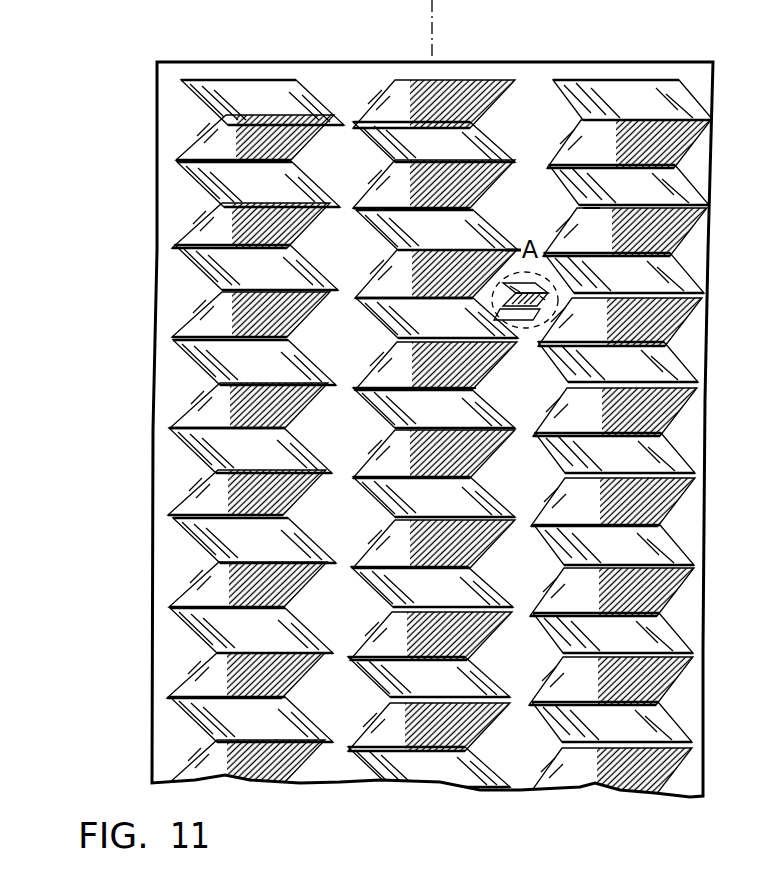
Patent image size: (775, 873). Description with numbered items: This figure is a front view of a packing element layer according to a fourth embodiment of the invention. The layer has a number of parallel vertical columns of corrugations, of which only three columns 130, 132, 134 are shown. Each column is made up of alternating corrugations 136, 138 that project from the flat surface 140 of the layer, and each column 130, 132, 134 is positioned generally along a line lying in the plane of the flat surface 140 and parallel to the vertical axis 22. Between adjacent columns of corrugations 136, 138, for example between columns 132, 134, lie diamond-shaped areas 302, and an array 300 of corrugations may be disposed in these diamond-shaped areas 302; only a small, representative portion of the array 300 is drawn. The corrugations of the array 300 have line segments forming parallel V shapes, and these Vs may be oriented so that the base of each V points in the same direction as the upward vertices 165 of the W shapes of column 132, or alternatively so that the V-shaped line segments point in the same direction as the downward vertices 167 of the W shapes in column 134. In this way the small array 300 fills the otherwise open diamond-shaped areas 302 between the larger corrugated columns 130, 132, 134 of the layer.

The vertical axis 22 is at (433, 8).
The column 130 is at (221, 458).
The column 132 is at (340, 804).
The column 134 is at (682, 803).
The corrugation 136 is at (188, 139).
The corrugation 138 is at (190, 191).
The flat surface 140 is at (540, 492).
The upward vertices 165 is at (470, 388).
The downward vertices 167 is at (597, 207).
The array of corrugations 300 is at (545, 364).
The diamond-shaped areas 302 is at (512, 235).